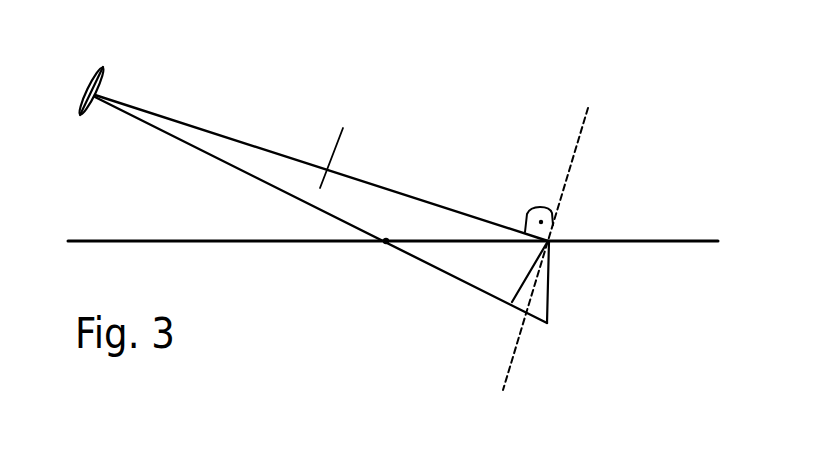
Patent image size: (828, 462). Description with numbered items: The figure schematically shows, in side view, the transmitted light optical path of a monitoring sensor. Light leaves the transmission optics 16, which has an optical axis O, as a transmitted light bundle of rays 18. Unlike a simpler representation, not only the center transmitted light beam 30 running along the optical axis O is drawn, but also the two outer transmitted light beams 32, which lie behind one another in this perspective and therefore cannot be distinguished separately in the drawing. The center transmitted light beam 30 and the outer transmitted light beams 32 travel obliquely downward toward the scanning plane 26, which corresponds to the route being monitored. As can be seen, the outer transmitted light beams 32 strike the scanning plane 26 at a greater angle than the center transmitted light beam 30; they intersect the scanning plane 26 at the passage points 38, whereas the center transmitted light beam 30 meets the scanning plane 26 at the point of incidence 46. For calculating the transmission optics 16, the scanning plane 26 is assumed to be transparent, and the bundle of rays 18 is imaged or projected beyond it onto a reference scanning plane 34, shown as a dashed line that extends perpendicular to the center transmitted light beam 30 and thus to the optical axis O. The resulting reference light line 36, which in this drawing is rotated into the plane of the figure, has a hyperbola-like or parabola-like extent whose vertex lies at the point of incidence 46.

The transmission optics 16 is at (88, 78).
The transmitted light bundle of rays 18 is at (341, 139).
The scanning plane 26 is at (643, 244).
The center transmitted light beam 30 is at (245, 142).
The outer transmitted light beams 32 is at (187, 147).
The reference scanning plane 34 is at (576, 157).
The reference light line 36 is at (552, 288).
The passage points 38 is at (385, 243).
The point of incidence 46 is at (551, 239).